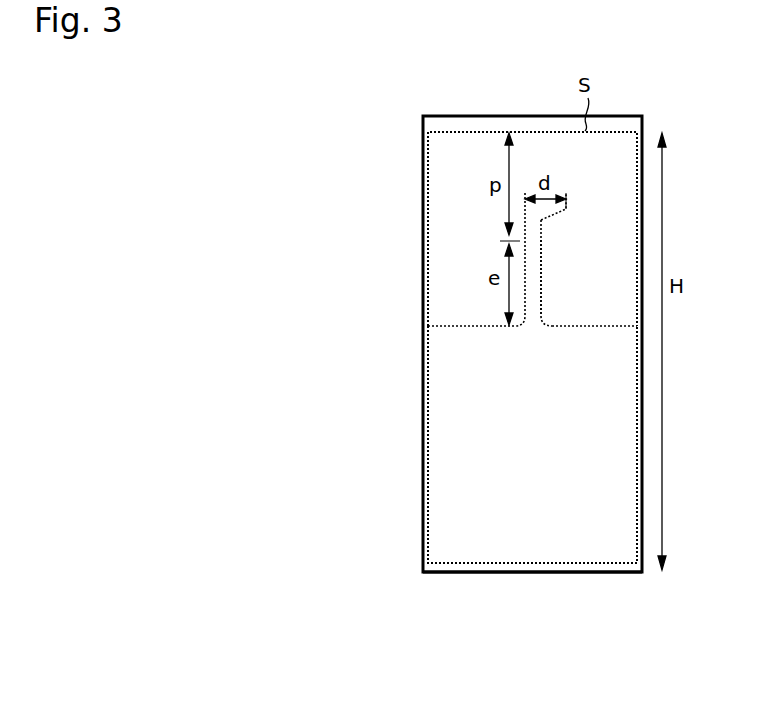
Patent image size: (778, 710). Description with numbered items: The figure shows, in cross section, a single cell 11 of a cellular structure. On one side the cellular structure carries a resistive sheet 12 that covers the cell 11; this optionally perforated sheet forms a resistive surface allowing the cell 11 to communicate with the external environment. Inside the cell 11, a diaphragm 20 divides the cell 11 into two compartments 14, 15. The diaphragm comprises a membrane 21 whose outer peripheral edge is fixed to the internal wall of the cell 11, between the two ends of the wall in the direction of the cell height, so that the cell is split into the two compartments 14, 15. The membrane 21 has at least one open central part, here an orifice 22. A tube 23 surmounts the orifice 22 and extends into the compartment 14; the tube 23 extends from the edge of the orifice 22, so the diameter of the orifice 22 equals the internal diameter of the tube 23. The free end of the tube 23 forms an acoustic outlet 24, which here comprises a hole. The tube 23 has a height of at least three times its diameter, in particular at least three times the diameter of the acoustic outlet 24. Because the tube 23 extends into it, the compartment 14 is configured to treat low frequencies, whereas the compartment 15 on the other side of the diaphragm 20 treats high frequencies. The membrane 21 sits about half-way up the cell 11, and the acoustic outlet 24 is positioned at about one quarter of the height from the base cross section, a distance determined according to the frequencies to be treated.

The cell 11 is at (368, 233).
The resistive sheet 12 is at (562, 585).
The compartment 14 is at (478, 170).
The compartment 15 is at (545, 491).
The diaphragm 20 is at (583, 330).
The membrane 21 is at (475, 328).
The orifice 22 is at (534, 328).
The tube 23 is at (541, 278).
The acoustic outlet 24 is at (541, 241).